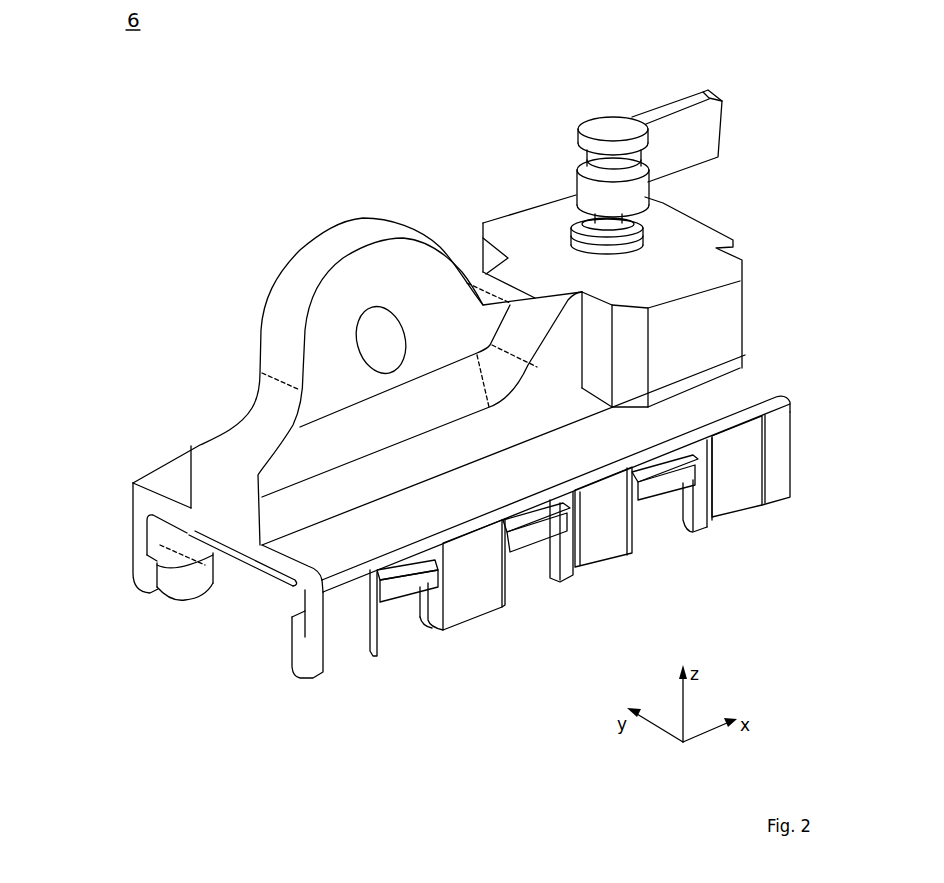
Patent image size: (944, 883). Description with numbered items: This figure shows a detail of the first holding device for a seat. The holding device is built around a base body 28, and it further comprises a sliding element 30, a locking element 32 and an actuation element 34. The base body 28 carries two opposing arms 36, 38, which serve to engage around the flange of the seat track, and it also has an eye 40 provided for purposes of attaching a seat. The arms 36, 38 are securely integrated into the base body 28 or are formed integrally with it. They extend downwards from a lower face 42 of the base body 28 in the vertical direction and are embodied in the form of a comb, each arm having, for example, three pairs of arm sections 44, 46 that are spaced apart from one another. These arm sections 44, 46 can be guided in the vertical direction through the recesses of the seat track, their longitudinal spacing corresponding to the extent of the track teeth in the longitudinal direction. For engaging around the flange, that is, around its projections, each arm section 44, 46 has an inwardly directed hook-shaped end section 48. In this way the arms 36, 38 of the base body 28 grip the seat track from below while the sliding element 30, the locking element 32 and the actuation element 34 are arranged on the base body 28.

The base body 28 is at (340, 206).
The sliding element 30 is at (250, 584).
The locking element 32 is at (680, 499).
The actuation element 34 is at (654, 92).
The arm 36 is at (118, 506).
The arm 38 is at (778, 441).
The eye 40 is at (380, 338).
The lower face 42 is at (188, 534).
The arm section 44 is at (140, 537).
The arm section 46 is at (315, 616).
The hook-shaped end section 48 is at (185, 584).